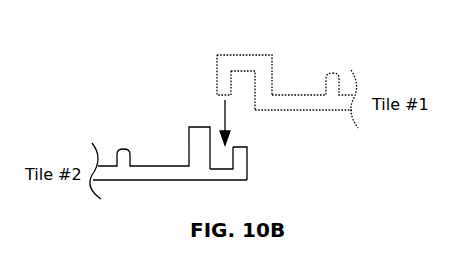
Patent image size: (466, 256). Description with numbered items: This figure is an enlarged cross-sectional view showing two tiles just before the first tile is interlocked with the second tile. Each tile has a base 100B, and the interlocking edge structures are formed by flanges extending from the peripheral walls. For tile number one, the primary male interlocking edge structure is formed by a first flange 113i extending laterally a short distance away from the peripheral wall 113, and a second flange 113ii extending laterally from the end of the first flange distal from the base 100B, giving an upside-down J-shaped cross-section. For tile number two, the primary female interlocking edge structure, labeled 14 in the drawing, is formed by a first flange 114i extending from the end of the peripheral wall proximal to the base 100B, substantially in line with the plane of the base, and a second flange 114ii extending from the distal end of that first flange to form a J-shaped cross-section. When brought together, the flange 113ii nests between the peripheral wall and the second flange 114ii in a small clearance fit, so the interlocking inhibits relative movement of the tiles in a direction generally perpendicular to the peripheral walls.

The peripheral wall 113 is at (252, 71).
The first flange 113i is at (243, 63).
The second flange 113ii is at (225, 83).
The second tile interlocking feature 14 is at (202, 157).
The first flange 114i is at (258, 177).
The second flange 114ii is at (242, 158).
The base 100B is at (302, 102).